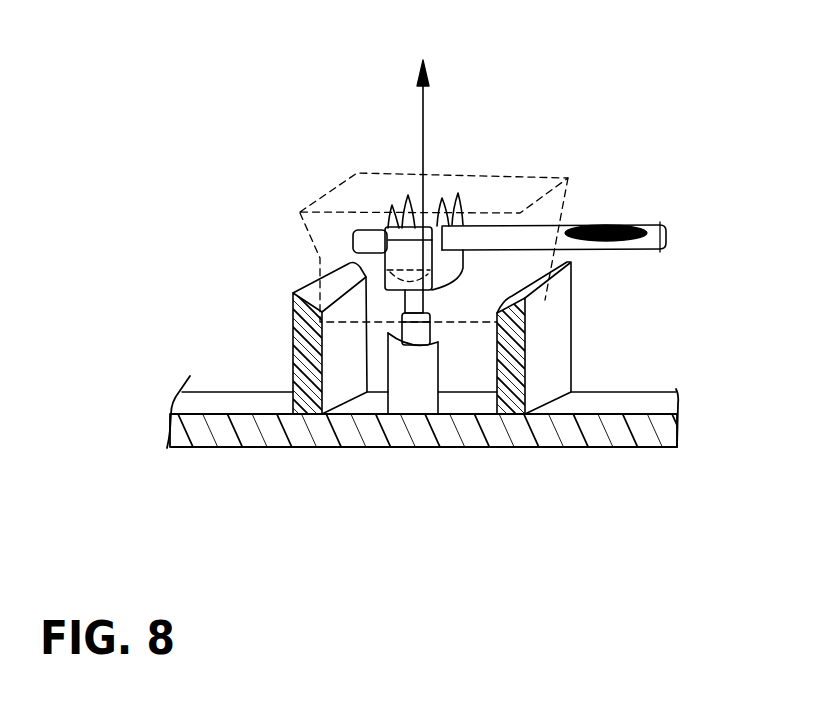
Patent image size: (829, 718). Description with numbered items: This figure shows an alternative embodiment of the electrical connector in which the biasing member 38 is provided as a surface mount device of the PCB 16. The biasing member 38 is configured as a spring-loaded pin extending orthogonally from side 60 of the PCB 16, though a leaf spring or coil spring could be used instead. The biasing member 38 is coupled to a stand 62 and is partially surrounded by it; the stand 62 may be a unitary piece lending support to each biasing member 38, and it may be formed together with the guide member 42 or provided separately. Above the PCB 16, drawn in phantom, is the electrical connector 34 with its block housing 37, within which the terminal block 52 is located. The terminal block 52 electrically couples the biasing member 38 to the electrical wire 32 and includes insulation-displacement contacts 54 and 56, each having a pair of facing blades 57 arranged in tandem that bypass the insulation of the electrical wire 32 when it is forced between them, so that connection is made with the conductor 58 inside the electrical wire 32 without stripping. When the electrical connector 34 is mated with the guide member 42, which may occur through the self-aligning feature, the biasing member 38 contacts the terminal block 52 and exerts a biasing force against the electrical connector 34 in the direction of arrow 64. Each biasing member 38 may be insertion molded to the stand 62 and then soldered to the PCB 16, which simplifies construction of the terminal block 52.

The PCB 16 is at (574, 454).
The electrical wire 32 is at (632, 250).
The electrical connector 34 is at (352, 158).
The block housing 37 is at (437, 180).
The biasing member 38 is at (413, 305).
The guide member 42 is at (307, 322).
The terminal block 52 is at (385, 275).
The insulation-displacement contact 54 is at (395, 190).
The insulation-displacement contact 56 is at (452, 186).
The facing blades 57 is at (387, 226).
The conductor 58 is at (618, 226).
The side of the PCB 60 is at (649, 397).
The stand 62 is at (410, 377).
The arrow 64 is at (425, 113).